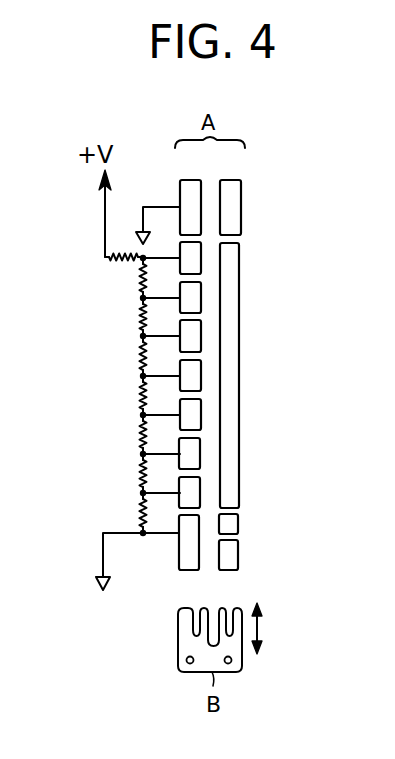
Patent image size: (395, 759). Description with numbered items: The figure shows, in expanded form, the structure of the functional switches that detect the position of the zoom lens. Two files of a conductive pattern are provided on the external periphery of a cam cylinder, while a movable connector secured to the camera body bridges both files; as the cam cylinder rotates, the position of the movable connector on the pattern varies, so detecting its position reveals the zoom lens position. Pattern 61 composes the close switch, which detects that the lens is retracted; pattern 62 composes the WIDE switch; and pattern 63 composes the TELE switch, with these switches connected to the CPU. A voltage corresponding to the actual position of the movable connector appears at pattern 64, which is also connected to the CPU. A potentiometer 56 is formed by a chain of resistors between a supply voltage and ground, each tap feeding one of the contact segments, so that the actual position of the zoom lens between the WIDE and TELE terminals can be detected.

The potentiometer 56 is at (118, 389).
The pattern 61 is at (238, 555).
The pattern 62 is at (238, 523).
The pattern 63 is at (241, 205).
The pattern 64 is at (258, 237).